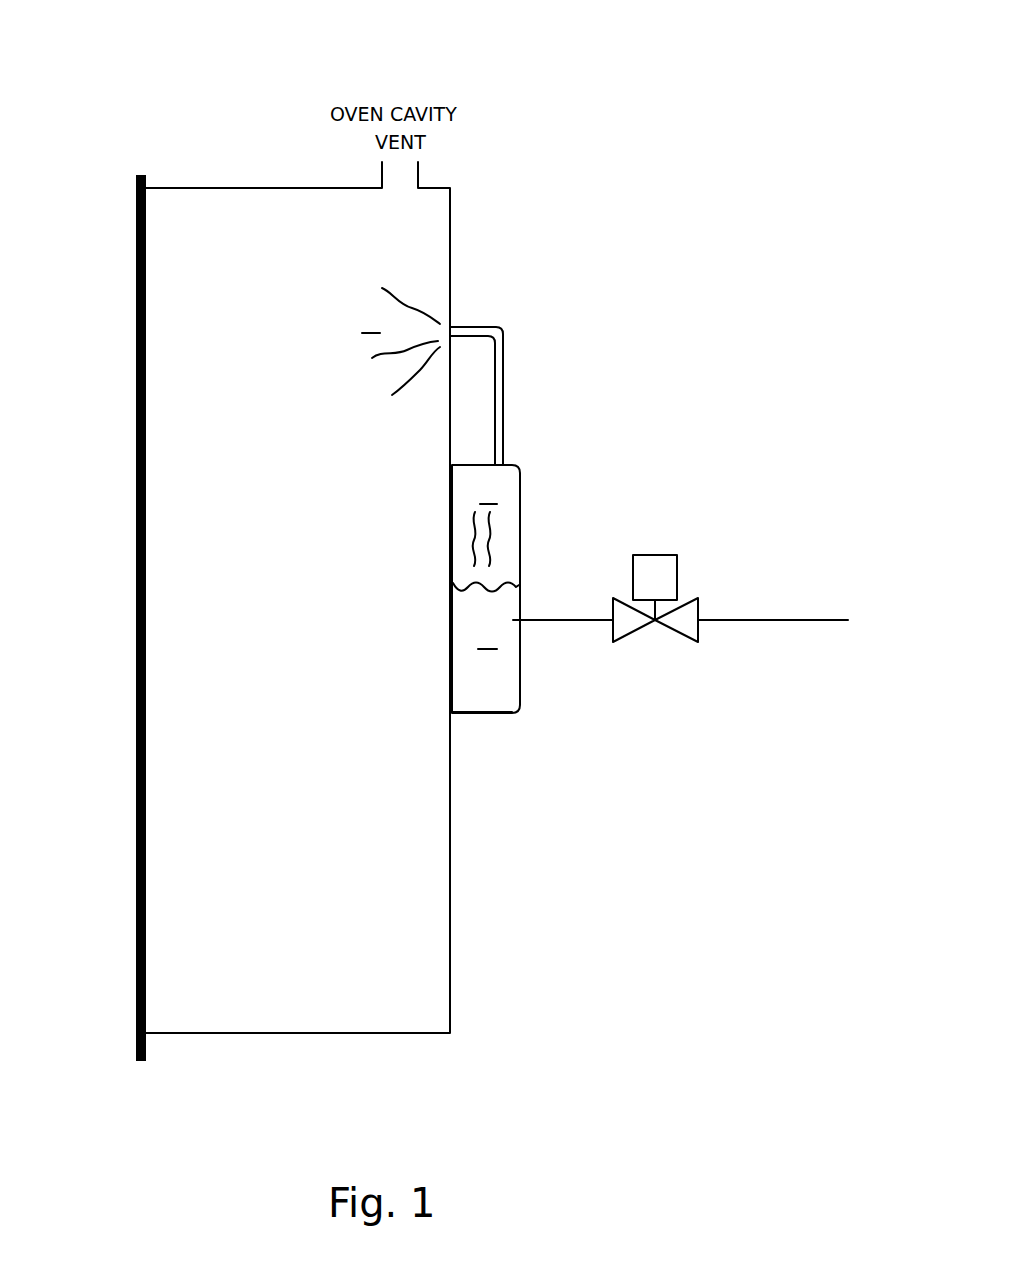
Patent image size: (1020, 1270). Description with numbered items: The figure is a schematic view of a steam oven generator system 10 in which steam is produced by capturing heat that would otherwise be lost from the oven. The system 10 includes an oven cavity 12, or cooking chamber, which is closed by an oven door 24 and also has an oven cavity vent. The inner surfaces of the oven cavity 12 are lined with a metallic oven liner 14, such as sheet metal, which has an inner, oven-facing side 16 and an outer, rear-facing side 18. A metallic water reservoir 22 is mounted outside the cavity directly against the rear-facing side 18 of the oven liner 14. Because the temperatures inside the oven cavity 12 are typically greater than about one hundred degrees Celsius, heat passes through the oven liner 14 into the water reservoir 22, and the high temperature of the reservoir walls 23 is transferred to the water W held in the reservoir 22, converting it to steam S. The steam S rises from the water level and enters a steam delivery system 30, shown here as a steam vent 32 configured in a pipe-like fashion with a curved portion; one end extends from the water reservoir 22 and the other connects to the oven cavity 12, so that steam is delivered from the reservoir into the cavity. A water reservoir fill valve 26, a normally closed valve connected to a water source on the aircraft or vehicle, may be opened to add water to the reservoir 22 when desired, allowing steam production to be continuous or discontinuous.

The steam oven generator system 10 is at (572, 114).
The oven cavity 12 is at (272, 441).
The oven liner 14 is at (450, 228).
The inner, oven-facing side 16 is at (449, 612).
The outer, rear-facing side 18 is at (453, 683).
The water reservoir 22 is at (516, 568).
The walls 23 is at (520, 512).
The oven door 24 is at (136, 450).
The water reservoir fill valve 26 is at (655, 622).
The steam delivery system 30 is at (538, 315).
The steam vent 32 is at (473, 327).